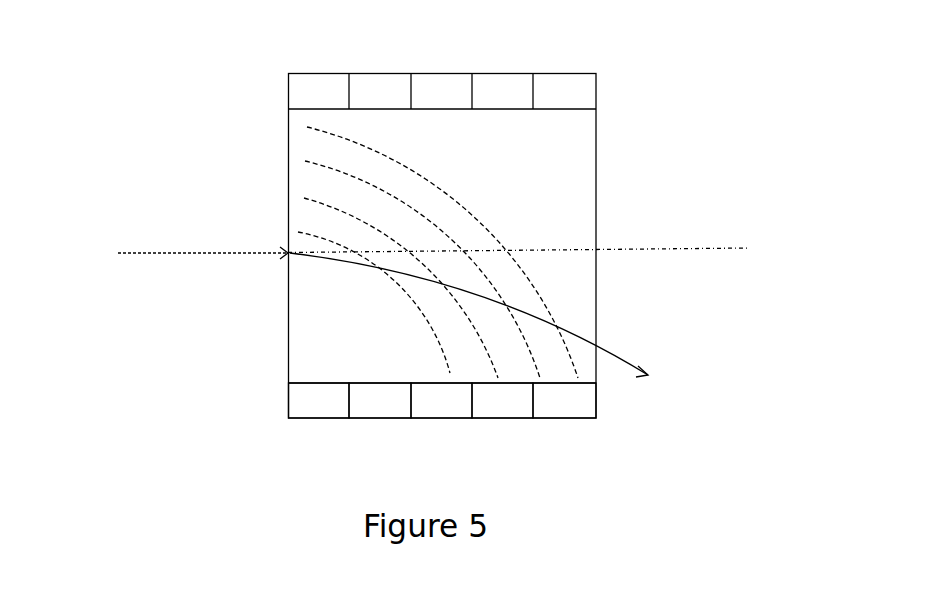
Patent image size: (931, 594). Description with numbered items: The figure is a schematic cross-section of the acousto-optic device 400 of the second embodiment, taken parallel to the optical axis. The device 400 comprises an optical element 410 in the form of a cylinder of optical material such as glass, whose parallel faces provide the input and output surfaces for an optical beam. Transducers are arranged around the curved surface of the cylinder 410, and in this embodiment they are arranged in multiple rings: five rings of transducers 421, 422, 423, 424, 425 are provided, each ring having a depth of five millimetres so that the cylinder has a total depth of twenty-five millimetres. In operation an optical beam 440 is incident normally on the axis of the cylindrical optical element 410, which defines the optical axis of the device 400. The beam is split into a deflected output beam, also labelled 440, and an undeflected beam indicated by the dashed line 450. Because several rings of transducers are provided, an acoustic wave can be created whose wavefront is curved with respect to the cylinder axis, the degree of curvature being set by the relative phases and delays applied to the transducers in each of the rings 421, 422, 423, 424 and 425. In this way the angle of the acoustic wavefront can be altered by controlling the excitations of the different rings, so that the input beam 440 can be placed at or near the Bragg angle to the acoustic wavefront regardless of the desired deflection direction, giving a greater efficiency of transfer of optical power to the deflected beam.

The acousto-optic device 400 is at (477, 273).
The optical element 410 is at (563, 209).
The first ring of transducers 421 is at (317, 412).
The second ring of transducers 422 is at (385, 412).
The third ring of transducers 423 is at (427, 408).
The fourth ring of transducers 424 is at (490, 405).
The fifth ring of transducers 425 is at (572, 407).
The optical beam 440 is at (180, 248).
The undeflected beam 450 is at (682, 253).